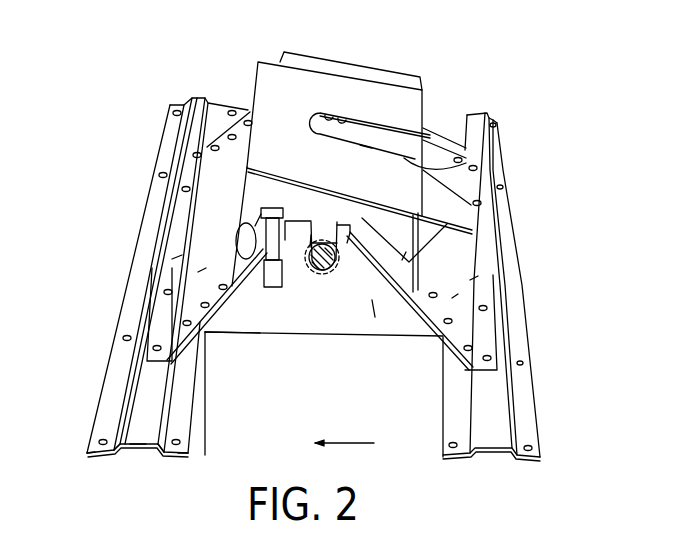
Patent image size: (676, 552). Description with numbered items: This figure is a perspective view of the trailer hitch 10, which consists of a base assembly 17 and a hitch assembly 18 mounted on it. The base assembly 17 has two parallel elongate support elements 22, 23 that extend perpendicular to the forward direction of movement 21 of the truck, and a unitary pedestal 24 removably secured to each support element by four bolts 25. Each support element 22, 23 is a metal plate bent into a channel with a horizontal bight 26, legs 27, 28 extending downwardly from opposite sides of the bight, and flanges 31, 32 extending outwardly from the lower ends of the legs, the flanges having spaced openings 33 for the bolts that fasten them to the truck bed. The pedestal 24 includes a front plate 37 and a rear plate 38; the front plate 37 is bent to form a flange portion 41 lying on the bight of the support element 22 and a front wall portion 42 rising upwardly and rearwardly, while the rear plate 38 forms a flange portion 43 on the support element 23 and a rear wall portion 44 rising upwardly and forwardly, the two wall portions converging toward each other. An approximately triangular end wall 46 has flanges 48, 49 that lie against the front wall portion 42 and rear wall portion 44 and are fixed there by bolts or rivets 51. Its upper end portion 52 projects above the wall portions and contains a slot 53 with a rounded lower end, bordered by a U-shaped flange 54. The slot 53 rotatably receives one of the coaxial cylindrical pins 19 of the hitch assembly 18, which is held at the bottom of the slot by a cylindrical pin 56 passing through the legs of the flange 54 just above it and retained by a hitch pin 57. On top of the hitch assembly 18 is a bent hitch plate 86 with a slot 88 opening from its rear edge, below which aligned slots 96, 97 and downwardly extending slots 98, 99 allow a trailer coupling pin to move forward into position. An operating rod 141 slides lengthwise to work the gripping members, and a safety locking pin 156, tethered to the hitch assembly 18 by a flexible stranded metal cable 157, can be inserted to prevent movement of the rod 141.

The trailer hitch 10 is at (422, 54).
The base assembly 17 is at (162, 137).
The hitch assembly 18 is at (431, 88).
The cylindrical pins 19 is at (325, 273).
The forward direction of movement 21 is at (343, 443).
The support element 22 is at (137, 415).
The support element 23 is at (496, 408).
The pedestal 24 is at (341, 340).
The bolts 25 is at (183, 192).
The horizontal bight 26 is at (138, 452).
The leg 27 is at (122, 458).
The leg 28 is at (162, 457).
The flange 31 is at (95, 456).
The flange 32 is at (177, 455).
The openings 33 is at (180, 443).
The front plate 37 is at (210, 244).
The rear plate 38 is at (457, 263).
The flange portion 41 is at (172, 259).
The front wall portion 42 is at (198, 272).
The flange portion 43 is at (478, 276).
The rear wall portion 44 is at (458, 294).
The end wall 46 is at (375, 317).
The flange 48 is at (243, 259).
The flange 49 is at (402, 260).
The bolts or rivets 51 is at (192, 310).
The upper end portion 52 is at (348, 218).
The slot 53 is at (322, 222).
The U-shaped flange 54 is at (297, 220).
The cylindrical pin 56 is at (310, 247).
The hitch pin 57 is at (348, 243).
The hitch plate 86 is at (255, 60).
The slot 88 is at (330, 114).
The slot 96 is at (355, 121).
The slot 97 is at (372, 142).
The slot 98 is at (413, 143).
The slot 99 is at (409, 158).
The operating rod 141 is at (270, 288).
The safety locking pin 156 is at (260, 209).
The flexible stranded metal cable 157 is at (240, 223).